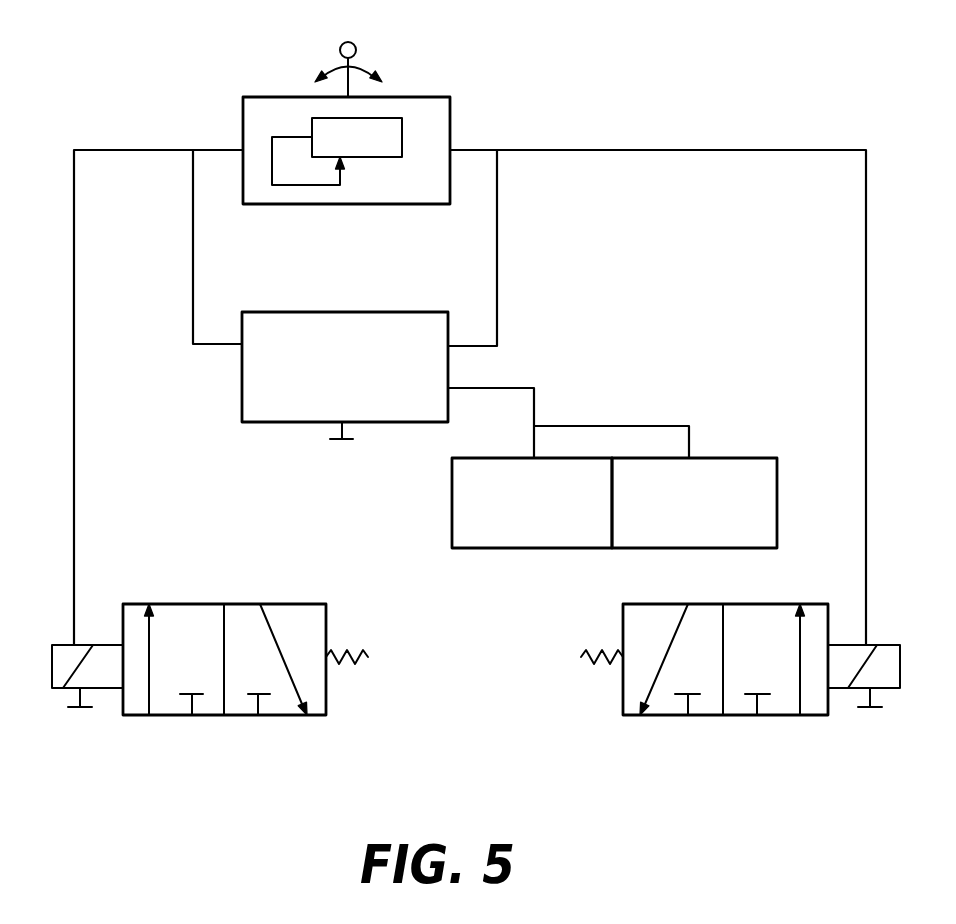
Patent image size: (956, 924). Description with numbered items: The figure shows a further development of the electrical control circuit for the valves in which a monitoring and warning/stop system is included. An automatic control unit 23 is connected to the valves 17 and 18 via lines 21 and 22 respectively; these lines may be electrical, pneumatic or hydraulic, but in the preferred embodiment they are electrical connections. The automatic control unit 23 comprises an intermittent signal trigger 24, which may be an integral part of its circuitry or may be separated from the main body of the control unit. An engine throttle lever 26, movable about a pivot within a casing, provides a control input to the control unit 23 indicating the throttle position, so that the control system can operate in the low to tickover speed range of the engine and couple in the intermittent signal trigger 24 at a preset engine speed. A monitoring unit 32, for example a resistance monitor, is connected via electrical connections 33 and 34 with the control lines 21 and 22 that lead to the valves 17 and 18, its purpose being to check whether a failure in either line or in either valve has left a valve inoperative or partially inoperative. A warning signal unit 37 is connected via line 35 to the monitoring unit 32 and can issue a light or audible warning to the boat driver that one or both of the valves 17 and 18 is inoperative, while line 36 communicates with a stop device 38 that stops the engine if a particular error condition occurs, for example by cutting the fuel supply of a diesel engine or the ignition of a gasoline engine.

The valve 17 is at (168, 752).
The valve 18 is at (707, 752).
The line 21 is at (74, 420).
The line 22 is at (866, 277).
The automatic control unit 23 is at (450, 140).
The intermittent signal trigger 24 is at (387, 143).
The engine throttle lever 26 is at (356, 47).
The monitoring unit 32 is at (272, 397).
The electrical connection 33 is at (193, 252).
The electrical connection 34 is at (497, 248).
The line 35 is at (534, 395).
The line 36 is at (647, 422).
The warning signal unit 37 is at (495, 548).
The stop device 38 is at (737, 458).